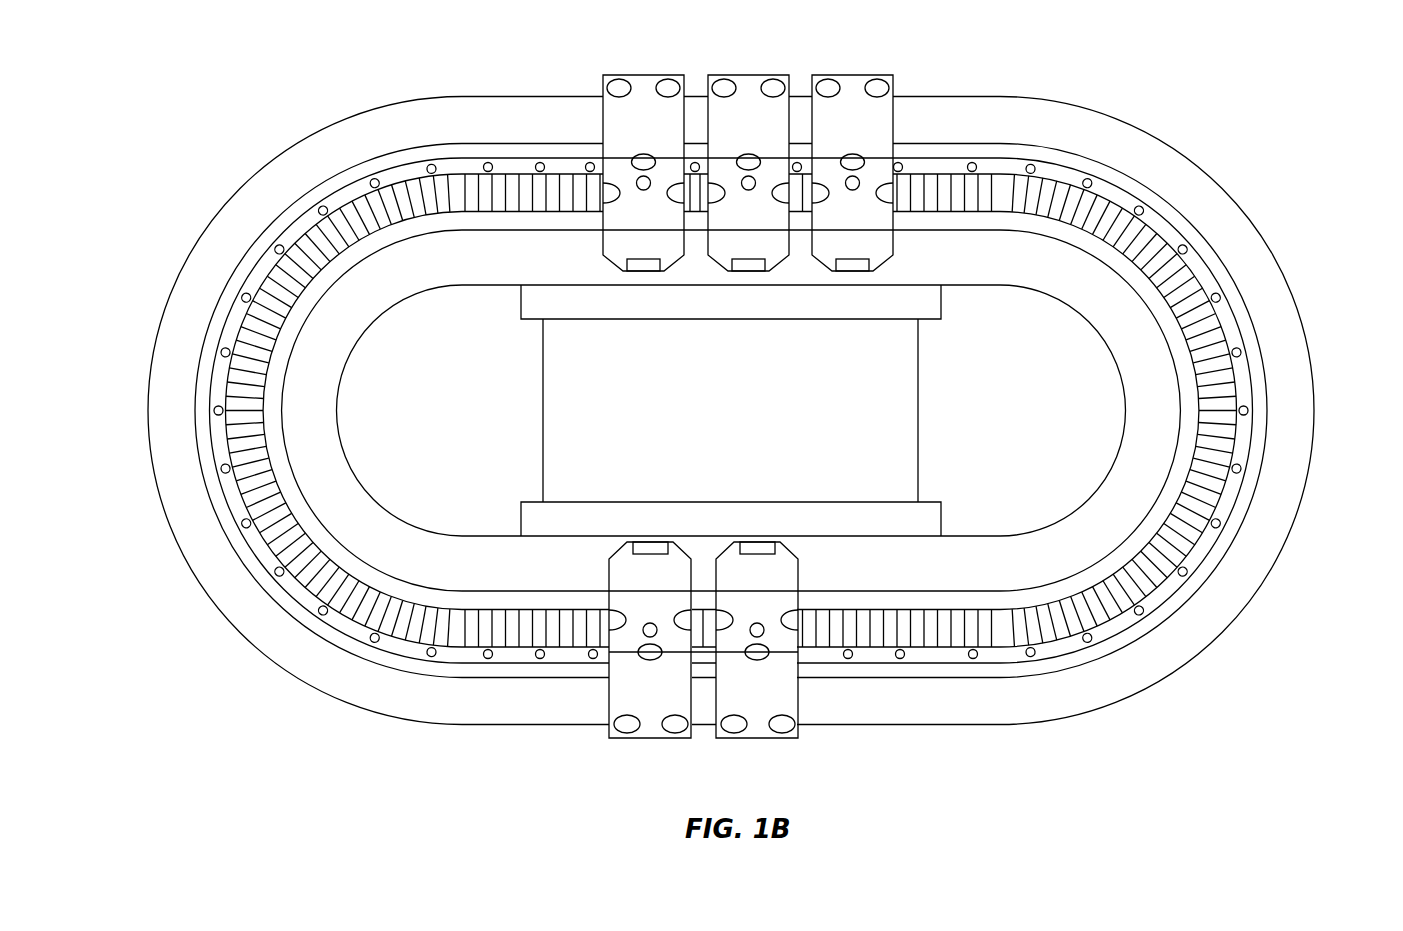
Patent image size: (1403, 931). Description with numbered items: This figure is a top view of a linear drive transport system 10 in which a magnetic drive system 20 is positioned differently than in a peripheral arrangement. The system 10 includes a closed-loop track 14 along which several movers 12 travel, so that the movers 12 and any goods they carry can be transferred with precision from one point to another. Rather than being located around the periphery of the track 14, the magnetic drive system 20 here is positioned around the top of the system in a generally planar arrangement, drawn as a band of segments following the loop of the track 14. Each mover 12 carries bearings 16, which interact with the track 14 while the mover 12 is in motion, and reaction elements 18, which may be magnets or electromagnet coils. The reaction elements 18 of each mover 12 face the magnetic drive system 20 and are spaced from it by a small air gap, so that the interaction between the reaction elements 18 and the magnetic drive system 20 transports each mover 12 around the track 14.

The linear drive transport system 10 is at (1283, 120).
The mover 12 is at (642, 113).
The track 14 is at (152, 388).
The bearings 16 is at (1290, 374).
The reaction elements 18 is at (636, 184).
The magnetic drive system 20 is at (257, 298).